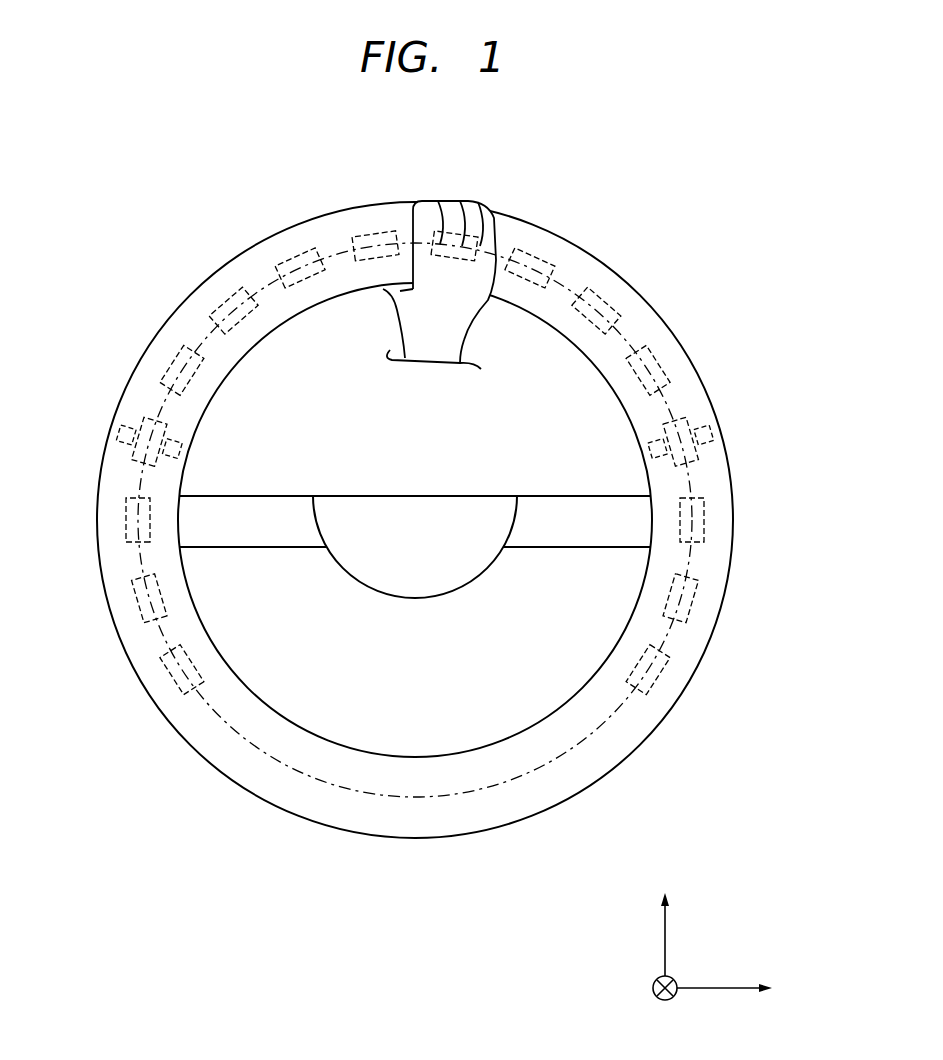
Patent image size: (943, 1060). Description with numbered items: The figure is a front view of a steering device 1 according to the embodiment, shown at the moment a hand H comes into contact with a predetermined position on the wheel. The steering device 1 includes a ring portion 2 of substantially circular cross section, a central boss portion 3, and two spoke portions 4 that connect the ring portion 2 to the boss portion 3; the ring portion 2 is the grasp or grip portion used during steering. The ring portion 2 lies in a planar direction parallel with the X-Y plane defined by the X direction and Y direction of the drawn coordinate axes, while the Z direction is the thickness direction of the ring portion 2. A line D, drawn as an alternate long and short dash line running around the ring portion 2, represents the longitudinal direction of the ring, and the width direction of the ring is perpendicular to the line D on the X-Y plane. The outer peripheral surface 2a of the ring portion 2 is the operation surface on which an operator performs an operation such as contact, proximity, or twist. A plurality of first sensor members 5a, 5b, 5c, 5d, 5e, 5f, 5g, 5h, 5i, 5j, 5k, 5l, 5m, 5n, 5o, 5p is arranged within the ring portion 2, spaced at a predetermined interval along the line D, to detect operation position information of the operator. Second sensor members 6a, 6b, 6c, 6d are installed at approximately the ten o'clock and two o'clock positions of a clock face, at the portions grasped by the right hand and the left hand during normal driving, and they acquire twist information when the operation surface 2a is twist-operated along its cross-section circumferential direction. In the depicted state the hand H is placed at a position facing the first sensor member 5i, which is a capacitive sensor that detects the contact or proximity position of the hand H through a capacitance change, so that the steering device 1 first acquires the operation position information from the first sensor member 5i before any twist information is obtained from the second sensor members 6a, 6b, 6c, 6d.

The steering device 1 is at (440, 554).
The ring portion 2 is at (440, 520).
The outer peripheral surface 2a is at (677, 403).
The boss portion 3 is at (410, 514).
The spoke portions 4 is at (276, 516).
The first sensor member 5a is at (163, 672).
The first sensor member 5b is at (132, 601).
The first sensor member 5c is at (124, 522).
The first sensor member 5d is at (126, 462).
The first sensor member 5e is at (173, 366).
The first sensor member 5f is at (228, 303).
The first sensor member 5g is at (290, 263).
The first sensor member 5h is at (366, 240).
The first sensor member 5i is at (470, 240).
The first sensor member 5j is at (548, 258).
The first sensor member 5k is at (606, 296).
The first sensor member 5l is at (670, 352).
The first sensor member 5m is at (700, 462).
The first sensor member 5n is at (706, 522).
The first sensor member 5o is at (695, 603).
The first sensor member 5p is at (662, 673).
The second sensor member 6a is at (702, 432).
The second sensor member 6b is at (643, 453).
The second sensor member 6c is at (128, 428).
The second sensor member 6d is at (178, 450).
The line D is at (458, 795).
The hand H is at (424, 330).
The X direction X is at (735, 988).
The Y direction Y is at (662, 916).
The Z direction Z is at (665, 1004).